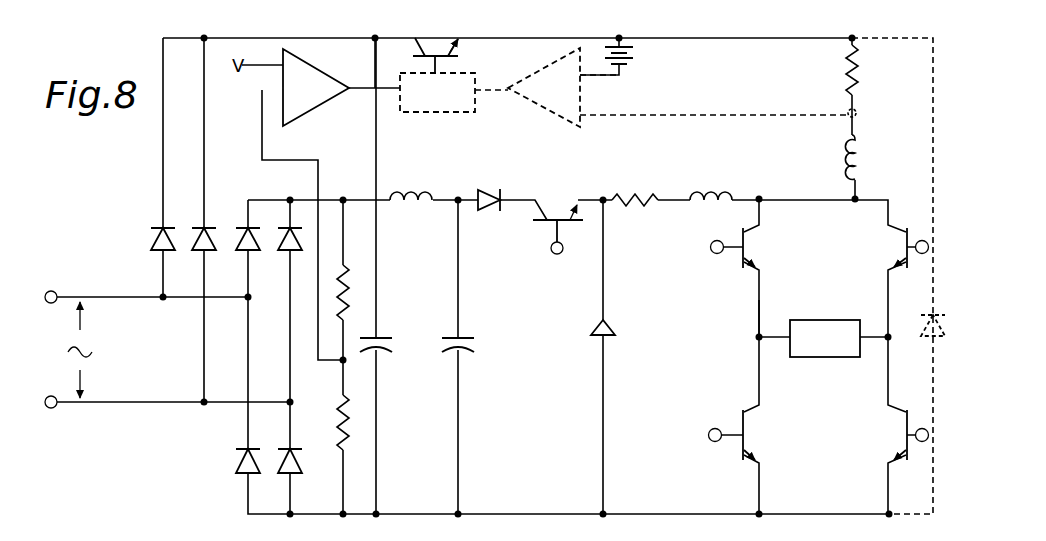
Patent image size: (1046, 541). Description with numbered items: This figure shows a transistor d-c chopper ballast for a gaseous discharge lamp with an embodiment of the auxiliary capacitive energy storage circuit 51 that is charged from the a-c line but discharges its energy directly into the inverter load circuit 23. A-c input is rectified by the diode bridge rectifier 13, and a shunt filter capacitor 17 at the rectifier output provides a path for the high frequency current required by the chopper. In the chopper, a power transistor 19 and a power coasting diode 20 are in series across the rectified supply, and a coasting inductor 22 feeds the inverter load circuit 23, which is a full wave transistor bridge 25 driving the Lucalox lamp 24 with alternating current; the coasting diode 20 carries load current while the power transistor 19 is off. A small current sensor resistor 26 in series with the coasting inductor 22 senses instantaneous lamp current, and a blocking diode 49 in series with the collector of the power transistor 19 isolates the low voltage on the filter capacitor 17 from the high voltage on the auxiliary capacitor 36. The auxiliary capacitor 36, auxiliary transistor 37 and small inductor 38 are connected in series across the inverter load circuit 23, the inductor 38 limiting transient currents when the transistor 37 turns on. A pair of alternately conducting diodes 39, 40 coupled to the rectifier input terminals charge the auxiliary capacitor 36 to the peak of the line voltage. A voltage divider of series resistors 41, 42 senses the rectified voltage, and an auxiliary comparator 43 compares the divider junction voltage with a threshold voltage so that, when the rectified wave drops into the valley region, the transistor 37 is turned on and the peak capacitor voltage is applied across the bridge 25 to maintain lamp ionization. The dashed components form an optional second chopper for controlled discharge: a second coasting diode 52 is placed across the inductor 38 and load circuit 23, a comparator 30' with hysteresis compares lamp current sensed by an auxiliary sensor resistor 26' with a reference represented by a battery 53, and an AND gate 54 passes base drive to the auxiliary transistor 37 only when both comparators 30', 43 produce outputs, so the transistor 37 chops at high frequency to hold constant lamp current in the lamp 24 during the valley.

The diode bridge rectifier 13 is at (282, 341).
The shunt filter capacitor 17 is at (448, 352).
The power transistor 19 is at (565, 222).
The power coasting diode 20 is at (598, 326).
The coasting inductor 22 is at (699, 192).
The inverter load circuit 23 is at (834, 442).
The Lucalox lamp 24 is at (818, 320).
The full wave transistor bridge 25 is at (762, 308).
The current sensor resistor 26 is at (635, 184).
The auxiliary current sensor resistor 26' is at (830, 70).
The comparator with hysteresis 30' is at (544, 93).
The auxiliary capacitor 36 is at (378, 338).
The auxiliary transistor 37 is at (430, 49).
The small inductor 38 is at (862, 142).
The diode 39 is at (152, 247).
The diode 40 is at (204, 229).
The series resistor 41 is at (348, 276).
The series resistor 42 is at (338, 442).
The auxiliary comparator 43 is at (314, 68).
The blocking diode 49 is at (486, 208).
The auxiliary capacitive energy storage circuit 51 is at (322, 36).
The second coasting diode 52 is at (928, 320).
The battery 53 is at (622, 60).
The AND gate 54 is at (448, 73).